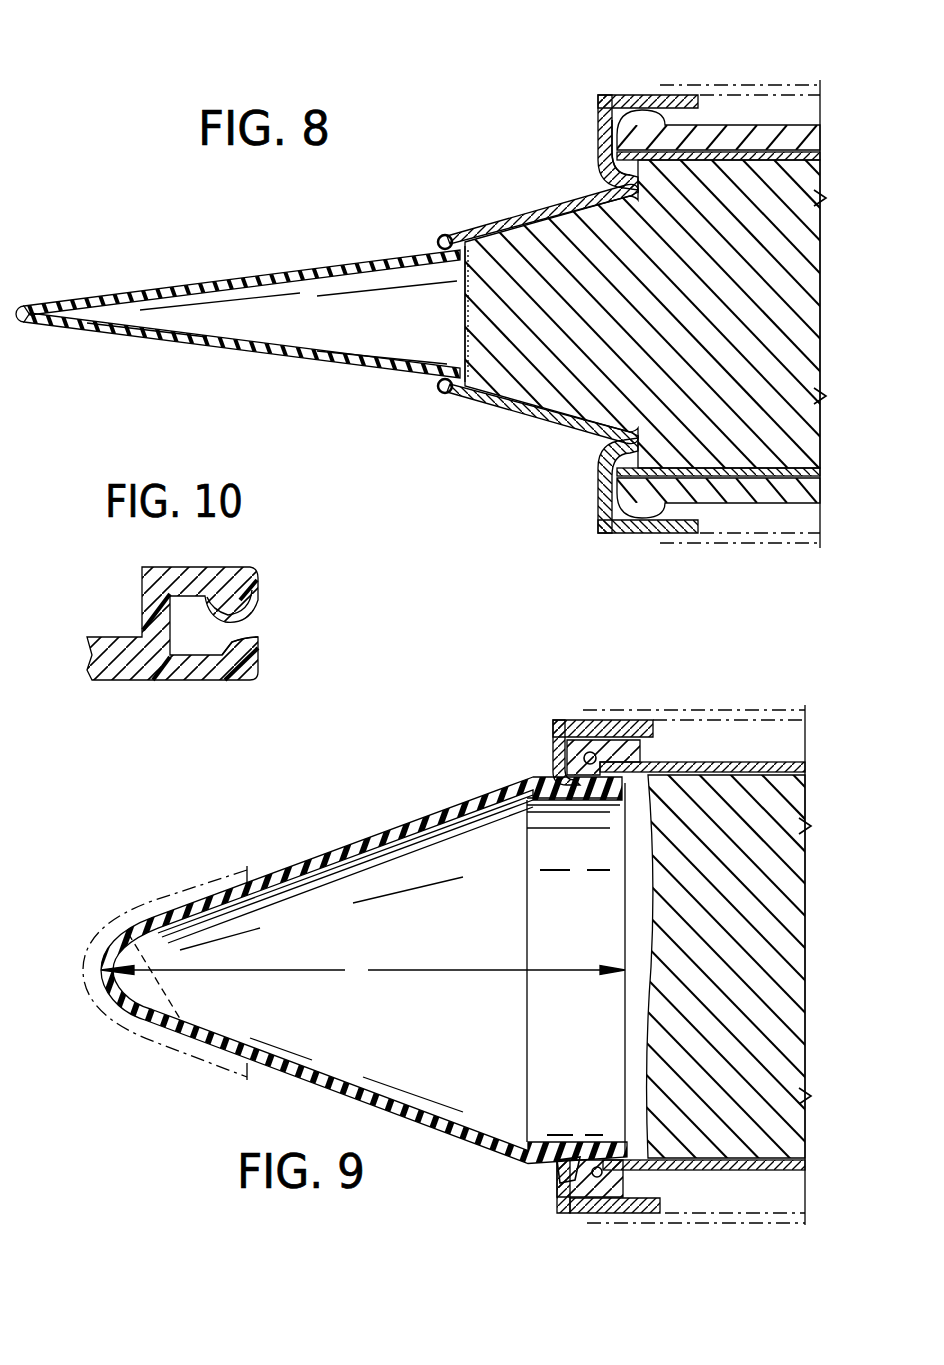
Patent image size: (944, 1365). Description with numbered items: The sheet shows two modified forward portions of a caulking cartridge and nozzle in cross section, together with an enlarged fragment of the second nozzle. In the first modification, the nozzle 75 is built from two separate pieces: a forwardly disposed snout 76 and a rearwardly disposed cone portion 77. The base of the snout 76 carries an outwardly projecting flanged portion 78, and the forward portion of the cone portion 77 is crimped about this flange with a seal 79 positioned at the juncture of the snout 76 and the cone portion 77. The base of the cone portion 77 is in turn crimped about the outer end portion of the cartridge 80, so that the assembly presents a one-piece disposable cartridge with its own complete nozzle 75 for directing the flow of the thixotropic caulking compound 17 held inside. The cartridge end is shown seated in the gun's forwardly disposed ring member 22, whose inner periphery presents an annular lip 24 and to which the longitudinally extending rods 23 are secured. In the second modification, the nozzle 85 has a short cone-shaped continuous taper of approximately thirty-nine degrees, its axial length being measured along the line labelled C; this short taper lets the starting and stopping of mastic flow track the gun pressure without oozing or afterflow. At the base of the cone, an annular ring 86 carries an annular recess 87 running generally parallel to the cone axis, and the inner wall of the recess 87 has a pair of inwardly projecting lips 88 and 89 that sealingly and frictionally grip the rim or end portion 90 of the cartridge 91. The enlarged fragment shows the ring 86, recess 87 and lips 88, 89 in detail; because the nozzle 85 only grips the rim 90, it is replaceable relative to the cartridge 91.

In FIG. 8, the thixotropic caulking material or compound 17 is at (593, 403).
In FIG. 9, the thixotropic caulking material or compound 17 is at (660, 912).
In FIG. 8, the rim or ring member 22 is at (605, 90).
In FIG. 8, the longitudinally extending rods or metal strips 23 is at (716, 90).
In FIG. 8, the annular lip or edge 24 is at (598, 158).
In FIG. 8, the nozzle 75 is at (430, 198).
In FIG. 8, the snout 76 is at (230, 278).
In FIG. 8, the cone portion 77 is at (530, 420).
In FIG. 8, the flanged portion 78 is at (452, 236).
In FIG. 8, the seal 79 is at (465, 340).
In FIG. 8, the cartridge 80 is at (752, 507).
In FIG. 9, the nozzle 85 is at (452, 1150).
In FIG. 10, the annular ring 86 is at (215, 568).
In FIG. 9, the annular ring 86 is at (597, 1197).
In FIG. 10, the annular recess 87 is at (238, 618).
In FIG. 9, the annular recess 87 is at (597, 1183).
In FIG. 10, the inwardly projecting lip 88 is at (238, 607).
In FIG. 9, the inwardly projecting lip 88 is at (607, 752).
In FIG. 10, the inwardly projecting lip 89 is at (238, 640).
In FIG. 9, the inwardly projecting lip 89 is at (612, 800).
In FIG. 9, the rim or end portion 90 is at (558, 1183).
In FIG. 9, the cartridge 91 is at (726, 1182).